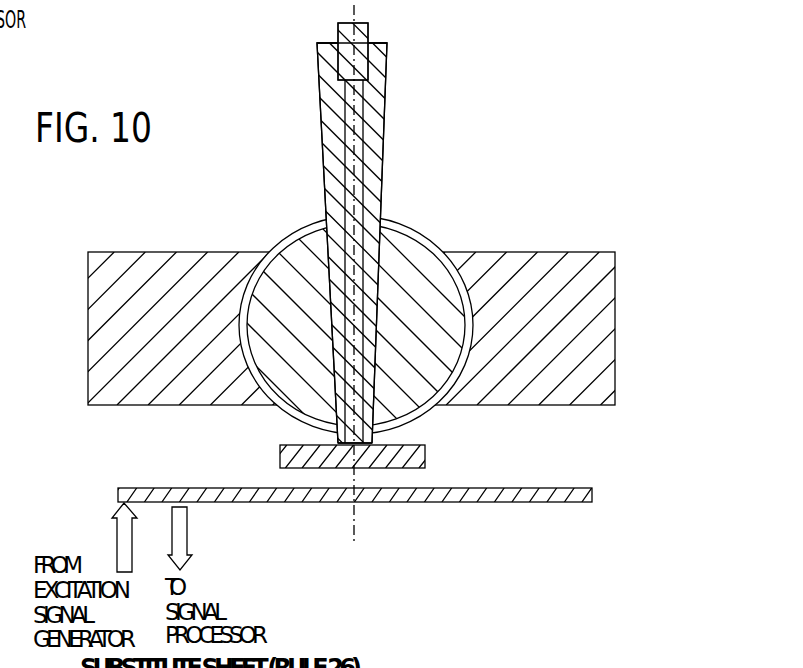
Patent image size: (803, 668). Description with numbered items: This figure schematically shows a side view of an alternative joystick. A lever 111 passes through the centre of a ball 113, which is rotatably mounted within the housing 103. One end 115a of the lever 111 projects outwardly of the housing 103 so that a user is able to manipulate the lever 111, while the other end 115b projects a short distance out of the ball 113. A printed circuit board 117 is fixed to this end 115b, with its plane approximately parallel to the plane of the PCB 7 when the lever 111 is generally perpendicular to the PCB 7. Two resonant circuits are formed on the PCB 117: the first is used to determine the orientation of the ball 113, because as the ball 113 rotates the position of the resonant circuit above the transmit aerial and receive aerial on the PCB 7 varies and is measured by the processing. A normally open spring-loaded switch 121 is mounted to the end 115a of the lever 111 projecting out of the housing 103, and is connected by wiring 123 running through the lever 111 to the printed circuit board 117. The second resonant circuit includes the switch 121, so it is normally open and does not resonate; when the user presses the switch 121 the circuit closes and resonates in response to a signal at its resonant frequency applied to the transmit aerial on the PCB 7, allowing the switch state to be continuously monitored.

The housing 103 is at (135, 275).
The lever 111 is at (328, 104).
The ball 113 is at (408, 267).
The end of the lever 115a is at (385, 97).
The other end of the lever 115b is at (374, 439).
The printed circuit board 117 is at (278, 462).
The spring-loaded switch 121 is at (368, 27).
The wiring 123 is at (362, 156).
The PCB 7 is at (541, 493).